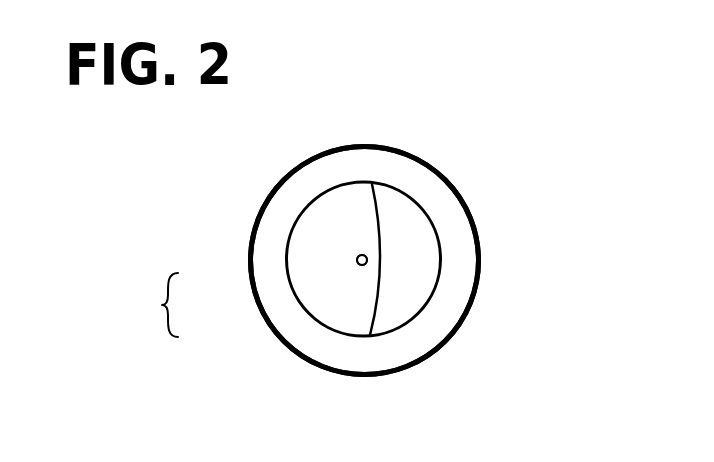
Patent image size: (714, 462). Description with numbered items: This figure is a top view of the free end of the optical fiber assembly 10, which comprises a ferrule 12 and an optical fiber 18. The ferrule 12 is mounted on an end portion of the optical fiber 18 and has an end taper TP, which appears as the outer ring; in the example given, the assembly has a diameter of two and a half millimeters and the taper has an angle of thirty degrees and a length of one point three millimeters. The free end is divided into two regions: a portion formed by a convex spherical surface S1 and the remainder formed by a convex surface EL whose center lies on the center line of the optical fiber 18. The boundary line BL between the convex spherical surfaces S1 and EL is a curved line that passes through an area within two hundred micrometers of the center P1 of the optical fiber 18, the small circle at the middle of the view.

The optical fiber assembly 10 is at (150, 305).
The ferrule 12 is at (252, 293).
The optical fiber 18 is at (355, 262).
The center of the optical fiber P1 is at (358, 257).
The convex spherical surface S1 is at (317, 220).
The convex surface EL is at (405, 218).
The taper TP is at (460, 268).
The boundary line BL is at (380, 318).